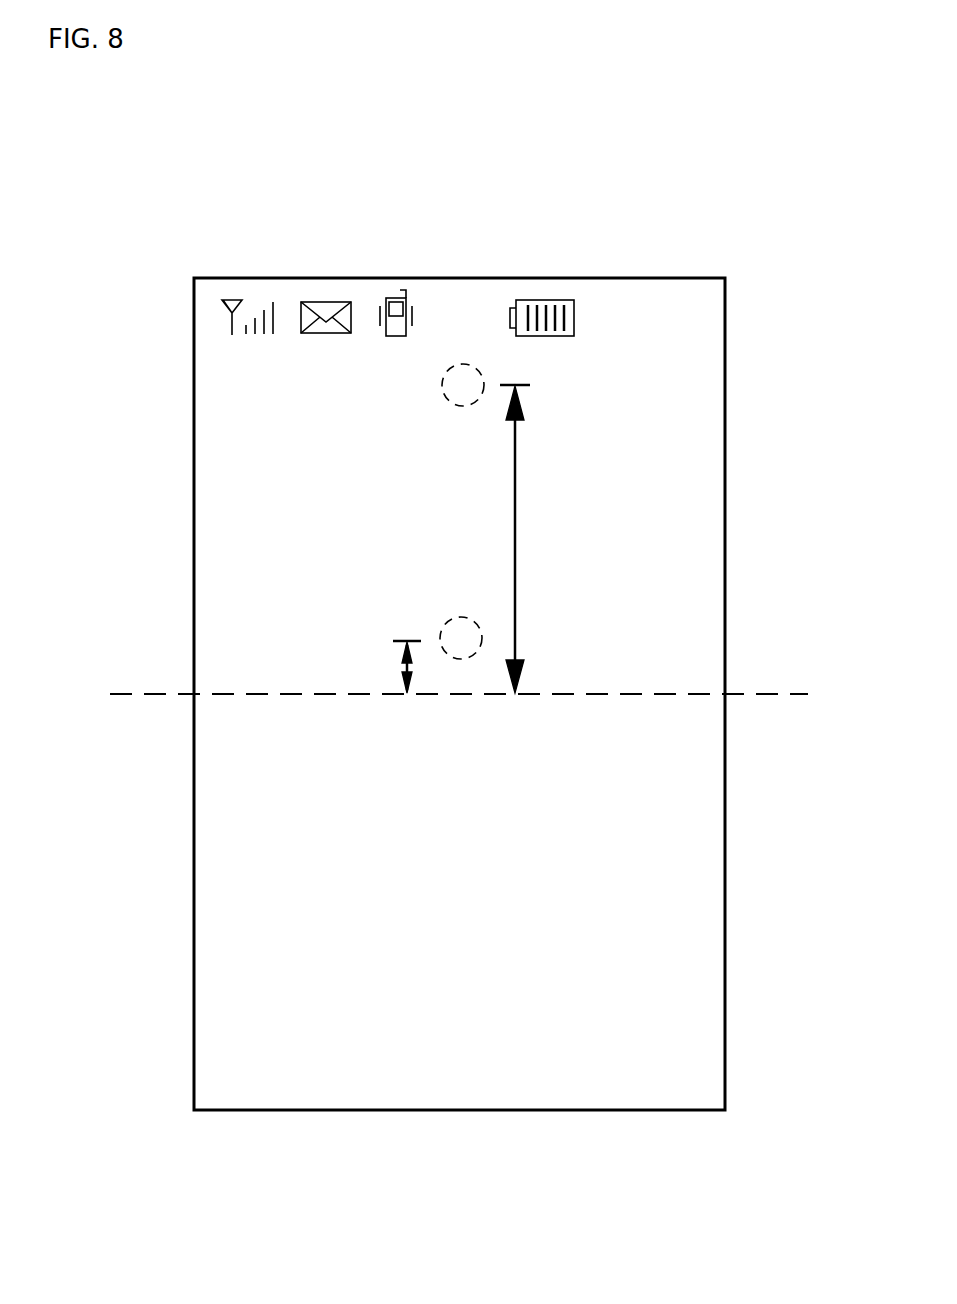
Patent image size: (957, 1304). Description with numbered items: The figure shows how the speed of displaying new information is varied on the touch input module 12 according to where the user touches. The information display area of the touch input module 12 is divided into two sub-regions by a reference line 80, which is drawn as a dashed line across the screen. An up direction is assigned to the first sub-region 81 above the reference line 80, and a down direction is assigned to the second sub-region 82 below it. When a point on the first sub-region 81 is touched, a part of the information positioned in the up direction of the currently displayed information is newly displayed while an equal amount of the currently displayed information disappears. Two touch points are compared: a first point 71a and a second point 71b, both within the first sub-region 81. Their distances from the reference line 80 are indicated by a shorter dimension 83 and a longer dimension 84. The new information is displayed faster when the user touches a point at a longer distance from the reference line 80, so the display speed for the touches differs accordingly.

The touch input module 12 is at (285, 205).
The first point 71a is at (440, 630).
The second point 71b is at (441, 385).
The reference line 80 is at (483, 701).
The first sub-region 81 is at (688, 447).
The second sub-region 82 is at (688, 892).
The first distance 83 is at (397, 662).
The second distance 84 is at (515, 548).